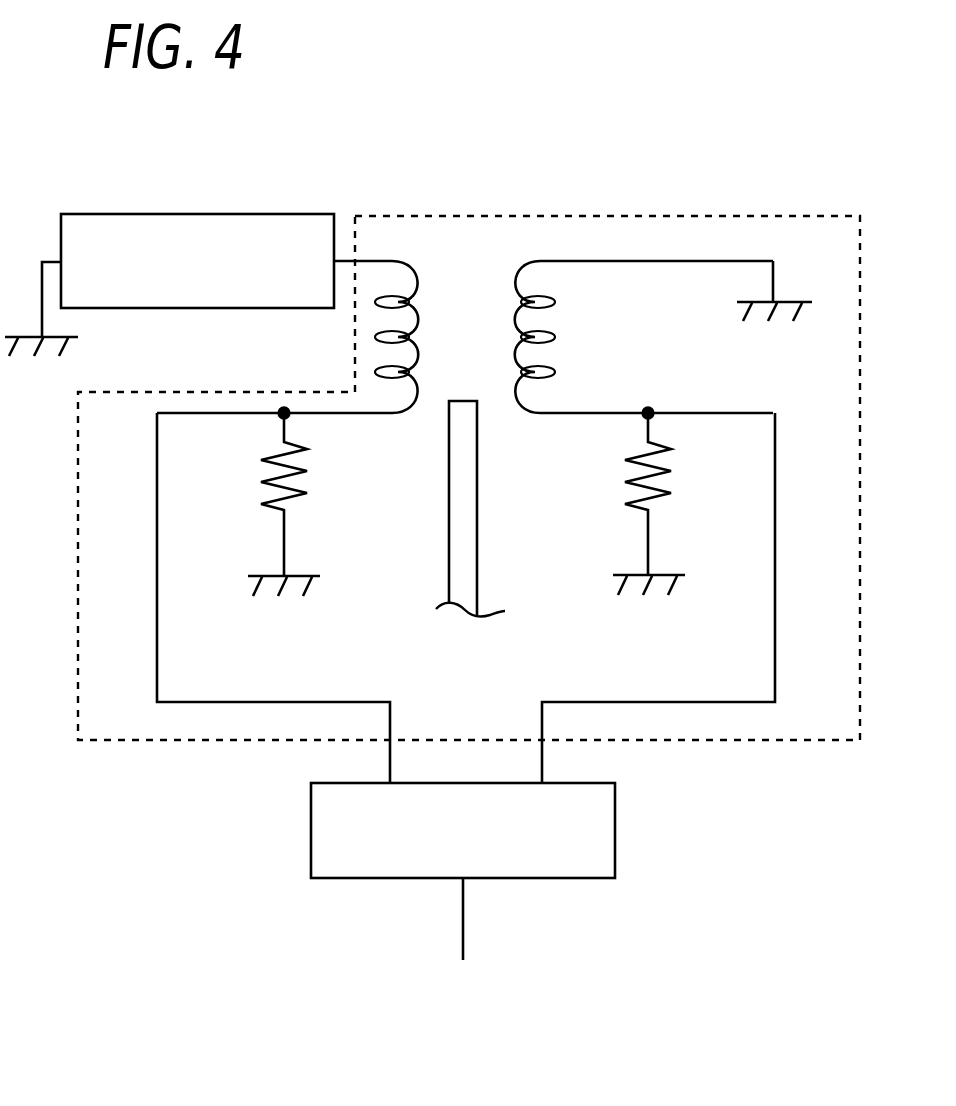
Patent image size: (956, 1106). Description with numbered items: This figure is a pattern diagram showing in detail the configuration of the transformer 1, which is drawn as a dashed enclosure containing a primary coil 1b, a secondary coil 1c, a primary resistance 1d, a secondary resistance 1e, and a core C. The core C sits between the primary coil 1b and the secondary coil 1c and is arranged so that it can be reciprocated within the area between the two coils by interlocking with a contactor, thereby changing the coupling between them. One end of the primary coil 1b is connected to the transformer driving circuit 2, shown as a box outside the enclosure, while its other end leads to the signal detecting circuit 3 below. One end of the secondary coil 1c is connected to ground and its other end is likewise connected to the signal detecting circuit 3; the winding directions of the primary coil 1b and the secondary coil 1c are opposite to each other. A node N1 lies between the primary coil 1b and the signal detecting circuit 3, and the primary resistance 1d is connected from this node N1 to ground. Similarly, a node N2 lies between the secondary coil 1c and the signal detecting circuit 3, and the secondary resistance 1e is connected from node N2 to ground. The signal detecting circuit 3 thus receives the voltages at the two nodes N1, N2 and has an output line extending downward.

The transformer 1 is at (797, 216).
The transformer driving circuit 2 is at (193, 214).
The signal detecting circuit 3 is at (616, 833).
The primary coil 1b is at (418, 318).
The secondary coil 1c is at (514, 392).
The primary resistance 1d is at (270, 487).
The secondary resistance 1e is at (672, 488).
The core C is at (479, 555).
The node N1 is at (285, 407).
The node N2 is at (651, 409).